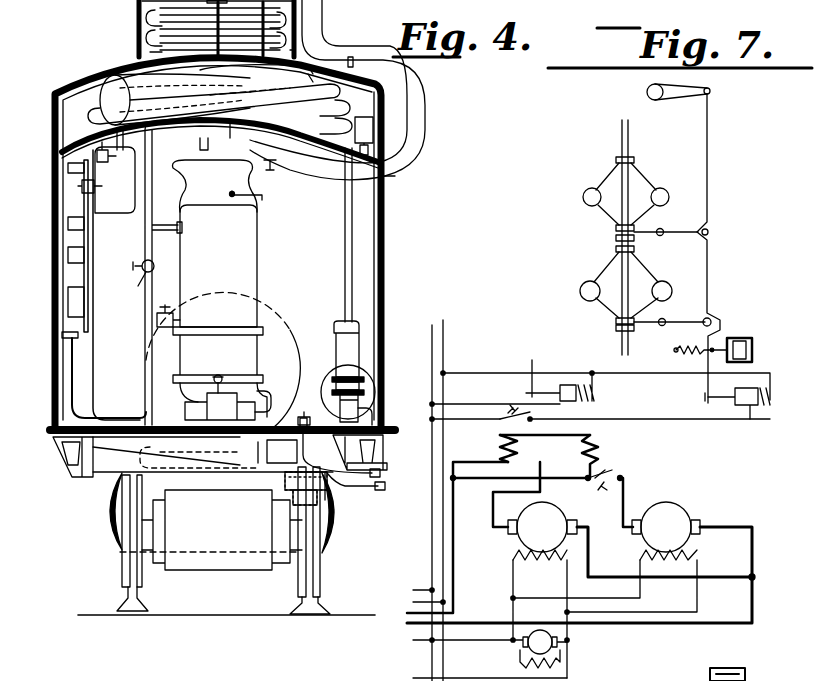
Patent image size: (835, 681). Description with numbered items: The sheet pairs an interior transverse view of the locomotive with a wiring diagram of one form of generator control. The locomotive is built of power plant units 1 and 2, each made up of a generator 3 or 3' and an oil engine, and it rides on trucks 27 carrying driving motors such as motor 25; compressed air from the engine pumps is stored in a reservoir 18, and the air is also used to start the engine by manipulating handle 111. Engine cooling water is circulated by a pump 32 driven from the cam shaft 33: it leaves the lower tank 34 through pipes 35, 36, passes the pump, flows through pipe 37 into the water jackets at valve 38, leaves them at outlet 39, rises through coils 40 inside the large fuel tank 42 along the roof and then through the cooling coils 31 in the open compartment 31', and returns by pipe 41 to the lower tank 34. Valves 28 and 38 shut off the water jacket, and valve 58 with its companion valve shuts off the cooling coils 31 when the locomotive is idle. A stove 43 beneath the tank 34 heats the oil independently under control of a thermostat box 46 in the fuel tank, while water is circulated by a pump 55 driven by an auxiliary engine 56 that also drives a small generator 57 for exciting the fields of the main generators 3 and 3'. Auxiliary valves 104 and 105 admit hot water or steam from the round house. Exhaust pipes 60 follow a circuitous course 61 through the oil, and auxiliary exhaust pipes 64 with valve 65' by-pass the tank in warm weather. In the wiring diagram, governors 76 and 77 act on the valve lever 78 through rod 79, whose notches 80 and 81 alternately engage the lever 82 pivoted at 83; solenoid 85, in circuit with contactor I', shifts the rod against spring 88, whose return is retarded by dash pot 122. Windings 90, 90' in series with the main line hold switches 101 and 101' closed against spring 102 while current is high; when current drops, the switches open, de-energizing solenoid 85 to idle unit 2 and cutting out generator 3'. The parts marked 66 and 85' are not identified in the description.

In FIG. 4, the power plant unit 1 is at (218, 271).
In FIG. 7, the power plant unit 2 is at (648, 237).
In FIG. 4, the generator 3 is at (223, 360).
In FIG. 7, the generator 3 is at (542, 531).
In FIG. 7, the generator 3' is at (666, 531).
In FIG. 4, the reservoir 18 is at (222, 540).
In FIG. 4, the driving motor 25 is at (211, 530).
In FIG. 4, the truck 27 is at (226, 602).
In FIG. 4, the valve 28 is at (135, 284).
In FIG. 4, the cooling coils 31 is at (193, 28).
In FIG. 4, the open compartment 31' is at (191, 48).
In FIG. 4, the pump 32 is at (220, 406).
In FIG. 4, the cam shaft 33 is at (217, 376).
In FIG. 4, the lower tank 34 is at (218, 454).
In FIG. 4, the pipe 35 is at (381, 430).
In FIG. 4, the pipe 36 is at (282, 400).
In FIG. 4, the pipe 37 is at (125, 325).
In FIG. 4, the valve 38 is at (170, 313).
In FIG. 4, the jacket outlet 39 is at (187, 273).
In FIG. 4, the coils 40 is at (381, 130).
In FIG. 4, the pipe 41 is at (93, 275).
In FIG. 4, the fuel tank 42 is at (148, 142).
In FIG. 4, the stove 43 is at (320, 492).
In FIG. 4, the thermostat box 46 is at (392, 168).
In FIG. 4, the pump 55 is at (373, 405).
In FIG. 4, the auxiliary engine 56 is at (336, 355).
In FIG. 4, the auxiliary generator 57 is at (395, 358).
In FIG. 7, the auxiliary generator 57 is at (546, 648).
In FIG. 4, the valve 58 is at (103, 194).
In FIG. 4, the exhaust pipe 60 is at (310, 77).
In FIG. 4, the circuitous course 61 is at (224, 99).
In FIG. 4, the auxiliary exhaust pipe 64 is at (414, 128).
In FIG. 4, the valve 65' is at (281, 177).
In FIG. 4, the fitting 66 is at (197, 149).
In FIG. 7, the speed governor 76 is at (626, 193).
In FIG. 7, the speed governor 77 is at (624, 285).
In FIG. 7, the valve lever 78 is at (682, 82).
In FIG. 7, the rod 79 is at (709, 157).
In FIG. 7, the V-shaped notch 80 is at (712, 232).
In FIG. 7, the V-shaped notch 81 is at (718, 322).
In FIG. 7, the lever 82 is at (652, 340).
In FIG. 7, the pivot 83 is at (663, 229).
In FIG. 7, the solenoid 85 is at (742, 408).
In FIG. 7, the solenoid 85' is at (580, 382).
In FIG. 7, the spring 88 is at (691, 341).
In FIG. 7, the winding 90 is at (529, 448).
In FIG. 7, the winding 90' is at (610, 456).
In FIG. 7, the switch 101 is at (513, 427).
In FIG. 7, the switch 101' is at (627, 468).
In FIG. 7, the spring 102 is at (510, 410).
In FIG. 4, the auxiliary valve 104 is at (360, 450).
In FIG. 4, the auxiliary valve 105 is at (375, 488).
In FIG. 4, the handle 111 is at (262, 202).
In FIG. 7, the dash pot 122 is at (739, 340).
In FIG. 7, the contactor I' is at (600, 386).